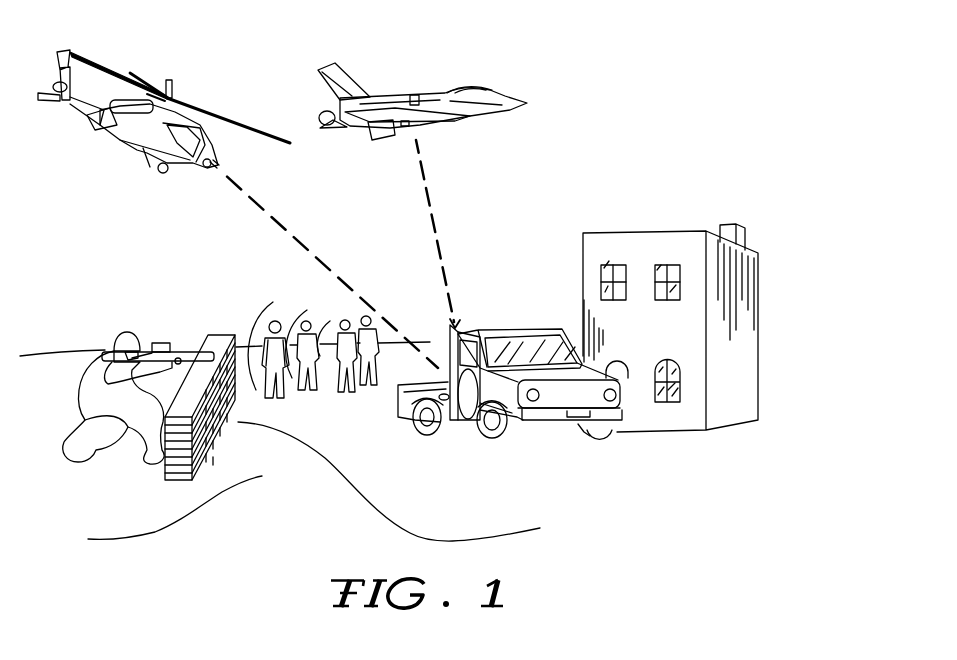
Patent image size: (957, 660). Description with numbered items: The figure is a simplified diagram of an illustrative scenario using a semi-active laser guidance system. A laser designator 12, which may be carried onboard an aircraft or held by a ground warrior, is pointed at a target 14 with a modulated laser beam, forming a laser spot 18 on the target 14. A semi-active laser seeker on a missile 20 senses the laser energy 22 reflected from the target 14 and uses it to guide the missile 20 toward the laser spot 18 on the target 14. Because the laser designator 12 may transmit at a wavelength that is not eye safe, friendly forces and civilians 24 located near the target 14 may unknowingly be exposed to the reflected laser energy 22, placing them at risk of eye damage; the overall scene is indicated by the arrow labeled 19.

The laser designator 12 is at (434, 96).
The target 14 is at (510, 411).
The laser spot 18 is at (462, 425).
The scene / system 19 is at (580, 127).
The missile 20 is at (158, 341).
The laser energy 22 is at (363, 392).
The friendly forces and civilians 24 is at (263, 340).